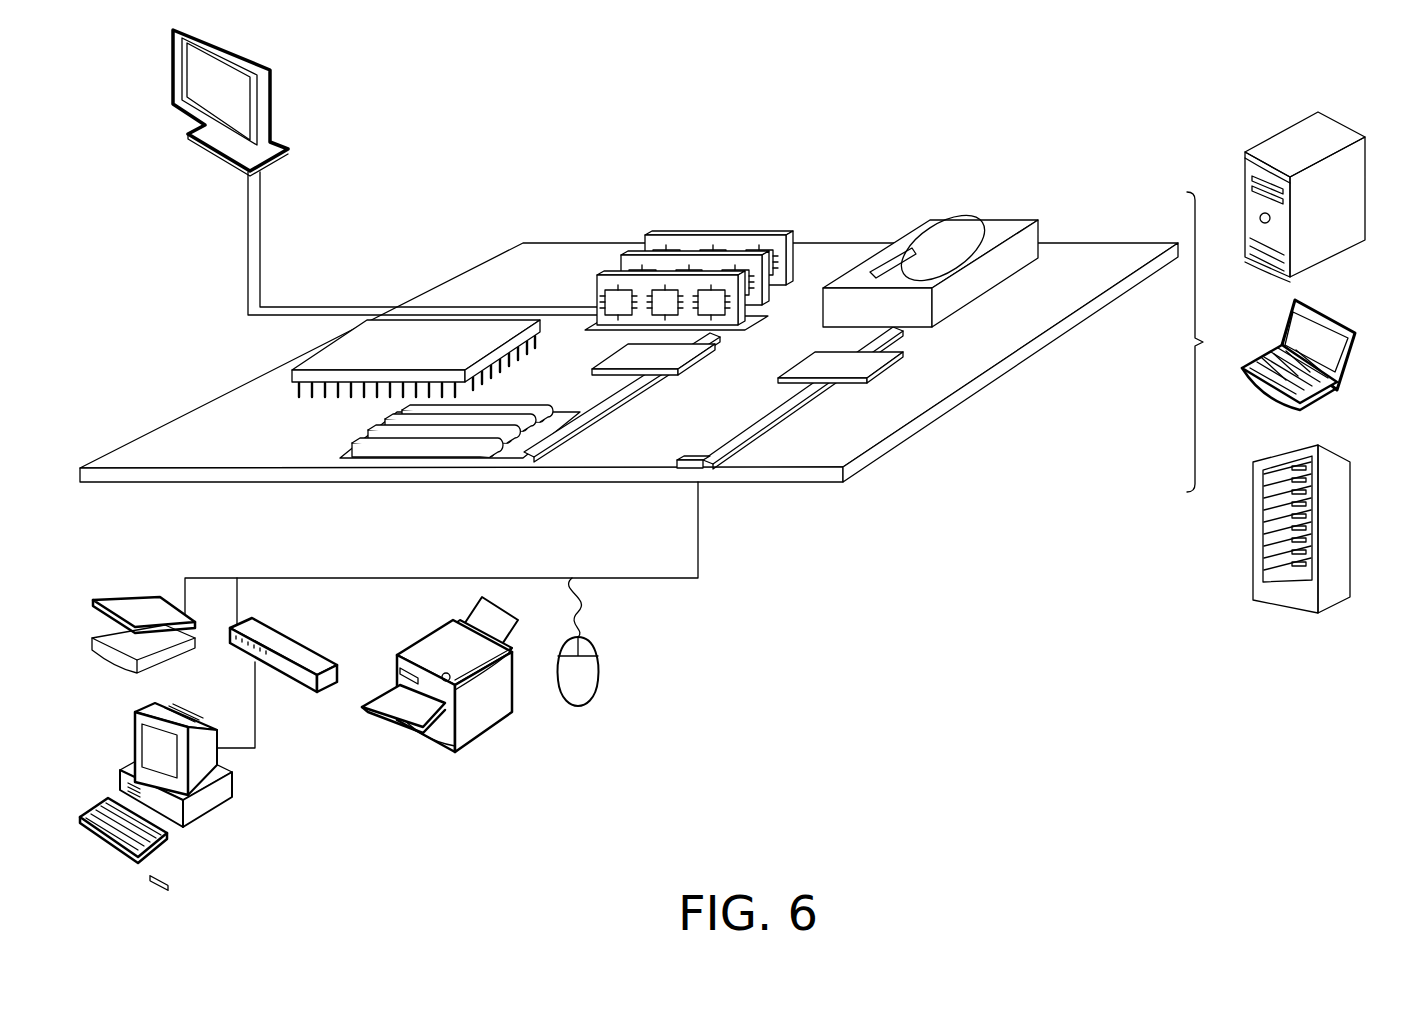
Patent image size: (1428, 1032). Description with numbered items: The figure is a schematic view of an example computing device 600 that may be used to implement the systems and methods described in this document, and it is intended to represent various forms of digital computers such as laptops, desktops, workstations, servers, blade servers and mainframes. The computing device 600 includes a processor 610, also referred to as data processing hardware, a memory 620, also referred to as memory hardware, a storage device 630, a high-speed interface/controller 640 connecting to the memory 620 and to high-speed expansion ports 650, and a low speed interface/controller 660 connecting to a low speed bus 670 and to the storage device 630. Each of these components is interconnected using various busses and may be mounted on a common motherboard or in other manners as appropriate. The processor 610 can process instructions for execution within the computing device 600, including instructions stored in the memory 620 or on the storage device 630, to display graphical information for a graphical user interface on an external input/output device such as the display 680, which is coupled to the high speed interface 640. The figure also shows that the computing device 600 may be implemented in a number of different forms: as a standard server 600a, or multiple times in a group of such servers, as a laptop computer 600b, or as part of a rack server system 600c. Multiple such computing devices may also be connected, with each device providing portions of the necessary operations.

The computing device 600 is at (986, 54).
The standard server 600a is at (1277, 135).
The laptop computer 600b is at (1337, 313).
The rack server system 600c is at (1348, 507).
The processor 610 is at (292, 372).
The memory 620 is at (712, 233).
The storage device 630 is at (978, 217).
The high-speed interface/controller 640 is at (662, 378).
The high-speed expansion ports 650 is at (352, 447).
The low speed interface/controller 660 is at (830, 354).
The low speed bus 670 is at (708, 470).
The display 680 is at (172, 78).